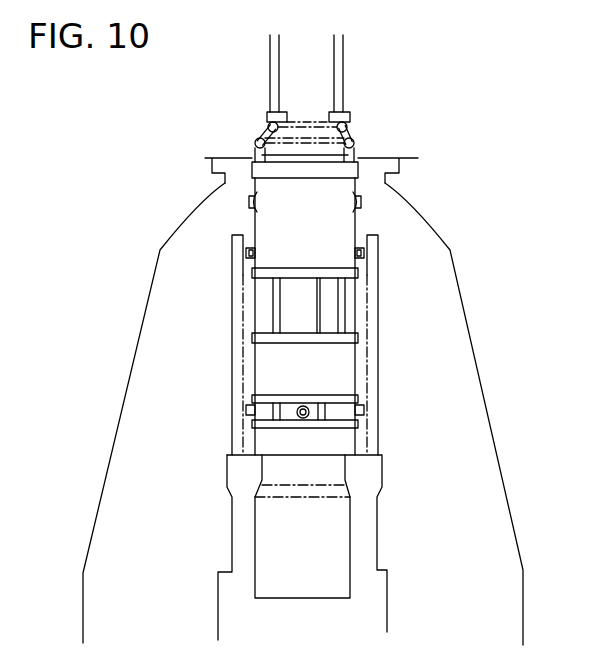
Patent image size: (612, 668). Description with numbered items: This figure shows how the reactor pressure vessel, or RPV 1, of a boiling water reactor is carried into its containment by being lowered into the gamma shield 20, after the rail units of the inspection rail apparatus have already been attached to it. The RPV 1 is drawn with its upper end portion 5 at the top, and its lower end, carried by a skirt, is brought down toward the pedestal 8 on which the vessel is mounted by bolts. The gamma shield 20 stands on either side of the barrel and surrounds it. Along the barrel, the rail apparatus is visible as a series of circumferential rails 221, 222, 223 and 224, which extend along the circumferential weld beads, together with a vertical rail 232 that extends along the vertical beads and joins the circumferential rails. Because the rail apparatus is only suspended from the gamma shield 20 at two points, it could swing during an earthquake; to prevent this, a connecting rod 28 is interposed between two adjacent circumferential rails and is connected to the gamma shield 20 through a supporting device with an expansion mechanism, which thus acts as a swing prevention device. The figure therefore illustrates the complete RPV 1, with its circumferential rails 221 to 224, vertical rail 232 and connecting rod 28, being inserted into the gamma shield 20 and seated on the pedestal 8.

The RPV 1 is at (258, 221).
The upper end portion 5 is at (138, 318).
The pedestal 8 is at (228, 525).
The gamma shield 20 is at (378, 358).
The connecting rod 28 is at (310, 290).
The circumferential rail 221 is at (252, 274).
The circumferential rail 222 is at (252, 338).
The circumferential rail 223 is at (252, 397).
The circumferential rail 224 is at (252, 422).
The vertical rail 232 is at (275, 308).